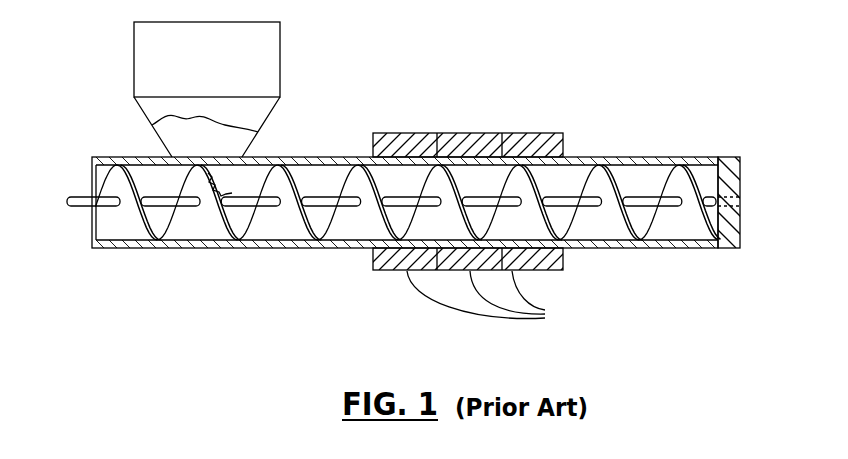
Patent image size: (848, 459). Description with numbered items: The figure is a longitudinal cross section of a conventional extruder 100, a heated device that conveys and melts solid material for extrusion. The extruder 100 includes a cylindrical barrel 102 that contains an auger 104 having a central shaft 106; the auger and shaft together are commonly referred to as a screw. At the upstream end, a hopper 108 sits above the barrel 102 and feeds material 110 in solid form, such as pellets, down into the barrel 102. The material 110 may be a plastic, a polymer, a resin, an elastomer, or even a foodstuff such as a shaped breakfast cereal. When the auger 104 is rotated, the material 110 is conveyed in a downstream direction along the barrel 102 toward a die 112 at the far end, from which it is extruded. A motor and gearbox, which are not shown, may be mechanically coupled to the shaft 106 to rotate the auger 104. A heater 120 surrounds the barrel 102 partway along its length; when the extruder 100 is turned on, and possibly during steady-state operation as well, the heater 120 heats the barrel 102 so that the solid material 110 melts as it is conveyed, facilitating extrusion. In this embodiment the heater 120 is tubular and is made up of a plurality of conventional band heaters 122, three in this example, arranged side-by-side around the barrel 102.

The extruder 100 is at (627, 78).
The cylindrical barrel 102 is at (266, 248).
The auger 104 is at (294, 186).
The central shaft 106 is at (83, 207).
The hopper 108 is at (133, 78).
The material 110 is at (228, 149).
The die 112 is at (731, 157).
The heater 120 is at (449, 108).
The band heaters 122 is at (501, 302).